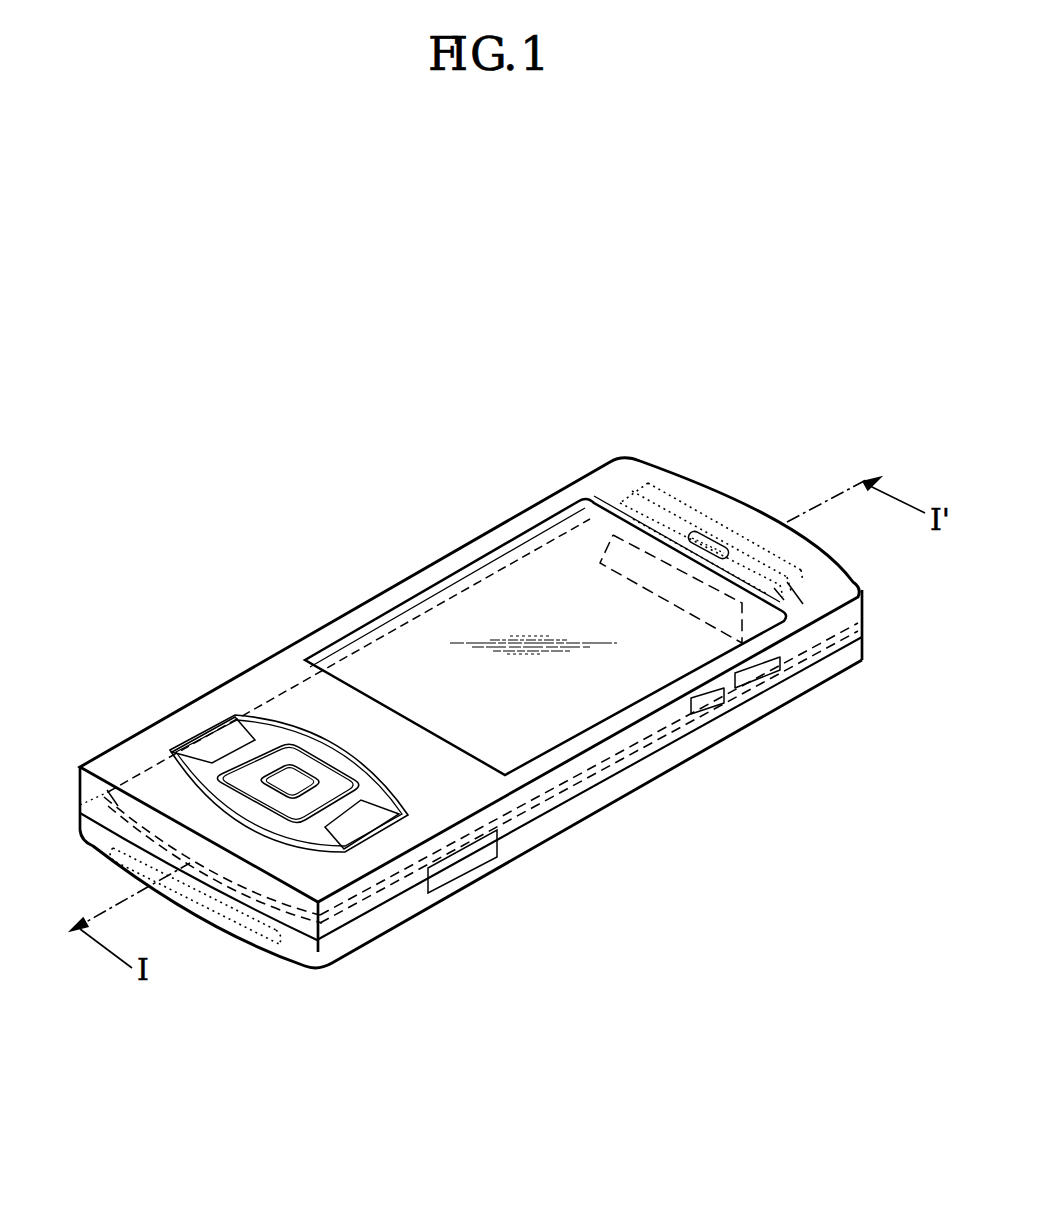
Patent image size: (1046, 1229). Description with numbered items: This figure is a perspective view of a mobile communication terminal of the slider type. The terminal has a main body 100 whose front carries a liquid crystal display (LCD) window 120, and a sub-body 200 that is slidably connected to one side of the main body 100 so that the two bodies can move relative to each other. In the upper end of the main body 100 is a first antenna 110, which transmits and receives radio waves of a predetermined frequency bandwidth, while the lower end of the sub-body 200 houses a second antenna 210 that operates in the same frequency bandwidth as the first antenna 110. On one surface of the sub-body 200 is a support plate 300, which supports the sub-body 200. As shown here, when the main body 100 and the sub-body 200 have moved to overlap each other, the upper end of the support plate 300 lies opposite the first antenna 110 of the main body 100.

The main body 100 is at (482, 545).
The first antenna 110 is at (662, 490).
The liquid crystal display (LCD) window 120 is at (382, 670).
The sub-body 200 is at (527, 838).
The second antenna 210 is at (247, 934).
The support plate 300 is at (389, 905).